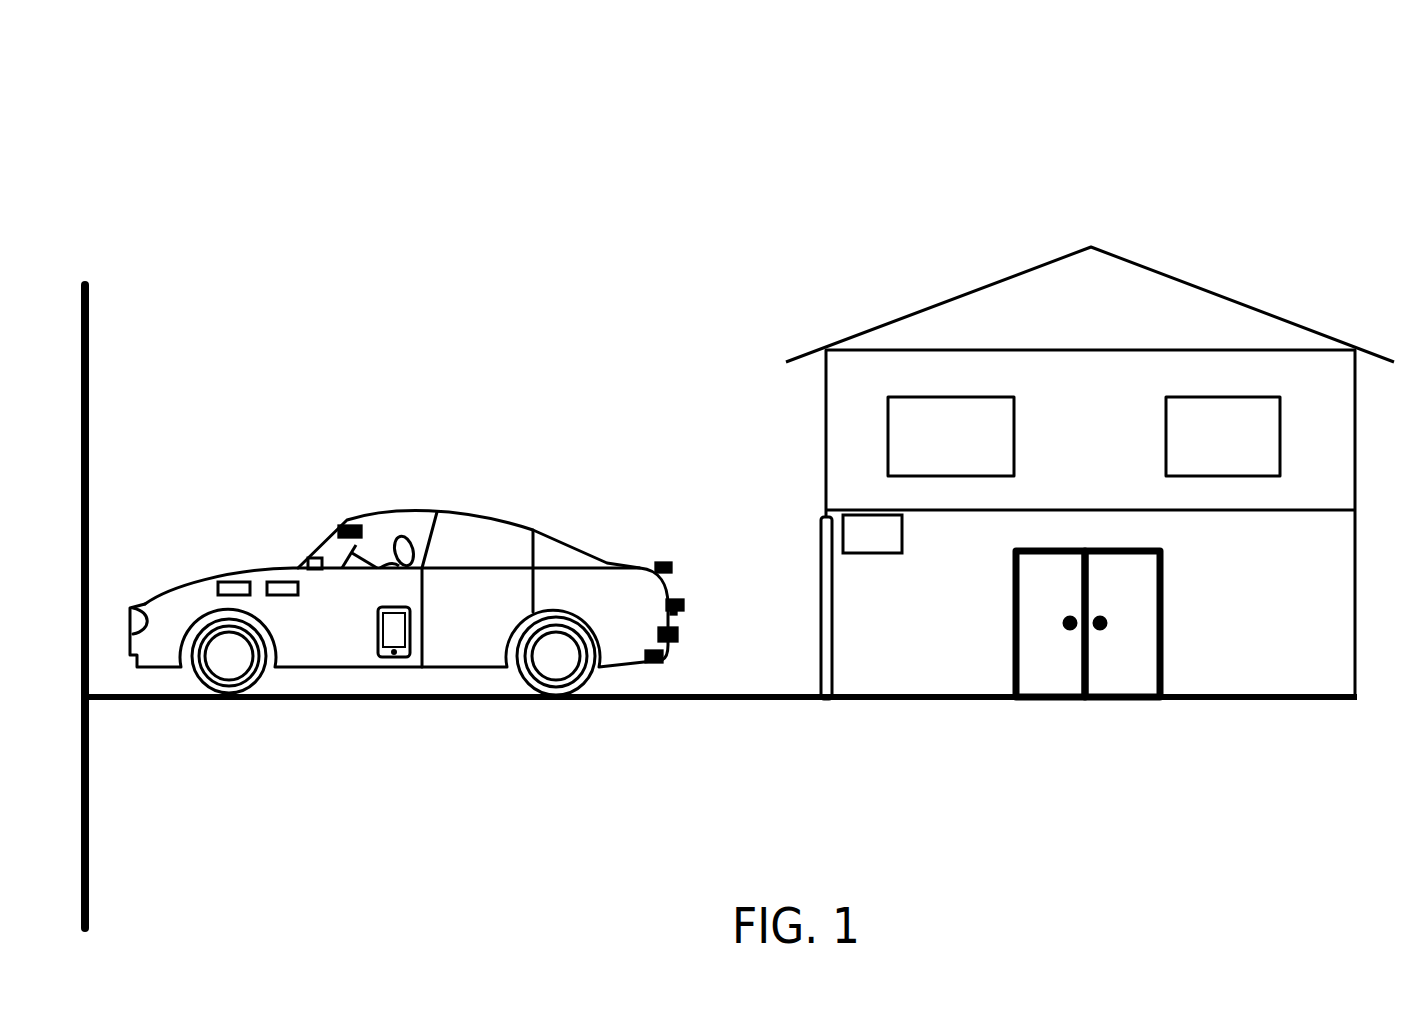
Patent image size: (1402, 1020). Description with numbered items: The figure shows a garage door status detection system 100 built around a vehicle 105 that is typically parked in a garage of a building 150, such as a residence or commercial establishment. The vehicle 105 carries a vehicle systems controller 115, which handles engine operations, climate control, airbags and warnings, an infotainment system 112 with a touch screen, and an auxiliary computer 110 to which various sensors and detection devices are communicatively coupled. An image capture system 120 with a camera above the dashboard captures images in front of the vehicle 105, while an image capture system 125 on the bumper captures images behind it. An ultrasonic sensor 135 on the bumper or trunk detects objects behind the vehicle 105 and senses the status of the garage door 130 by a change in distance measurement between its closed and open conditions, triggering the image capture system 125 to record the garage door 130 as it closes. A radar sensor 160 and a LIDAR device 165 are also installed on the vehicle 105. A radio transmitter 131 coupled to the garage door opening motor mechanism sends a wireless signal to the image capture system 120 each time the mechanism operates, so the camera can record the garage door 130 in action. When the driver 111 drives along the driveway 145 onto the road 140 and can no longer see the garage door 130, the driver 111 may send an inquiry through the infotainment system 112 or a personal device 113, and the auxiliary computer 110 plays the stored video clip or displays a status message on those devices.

The garage door status detection system 100 is at (218, 137).
The vehicle 105 is at (488, 492).
The auxiliary computer 110 is at (285, 581).
The driver 111 is at (395, 532).
The infotainment system 112 is at (316, 571).
The personal device 113 is at (377, 652).
The vehicle systems controller 115 is at (226, 581).
The image capture system 120 is at (350, 526).
The image capture system 125 is at (683, 606).
The garage door 130 is at (819, 578).
The radio transmitter 131 is at (872, 534).
The ultrasonic sensor 135 is at (666, 561).
The road 140 is at (89, 823).
The driveway 145 is at (477, 702).
The building 150 is at (821, 279).
The radar sensor 160 is at (680, 641).
The light detection and ranging (LIDAR) device 165 is at (660, 664).